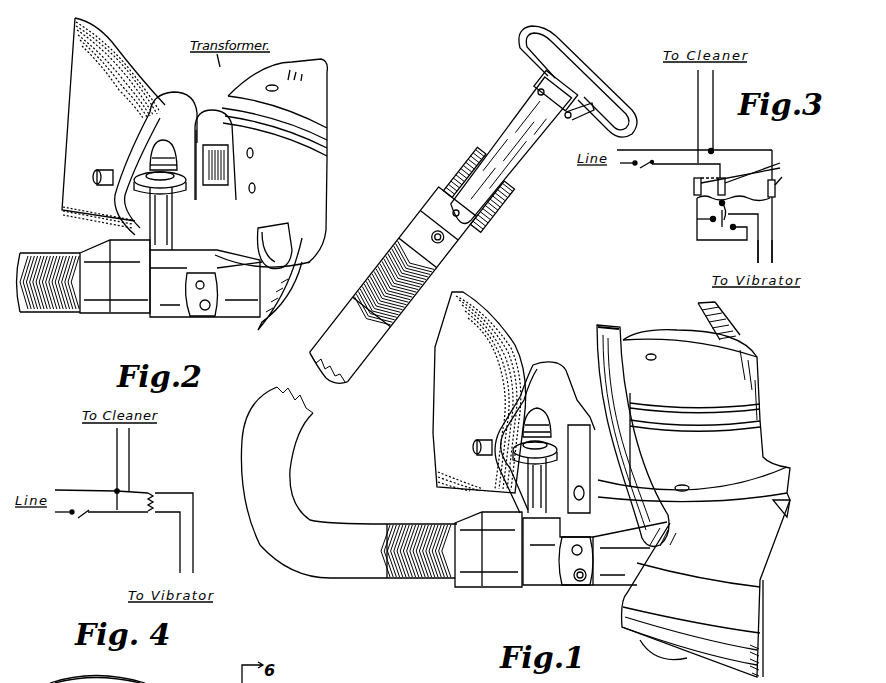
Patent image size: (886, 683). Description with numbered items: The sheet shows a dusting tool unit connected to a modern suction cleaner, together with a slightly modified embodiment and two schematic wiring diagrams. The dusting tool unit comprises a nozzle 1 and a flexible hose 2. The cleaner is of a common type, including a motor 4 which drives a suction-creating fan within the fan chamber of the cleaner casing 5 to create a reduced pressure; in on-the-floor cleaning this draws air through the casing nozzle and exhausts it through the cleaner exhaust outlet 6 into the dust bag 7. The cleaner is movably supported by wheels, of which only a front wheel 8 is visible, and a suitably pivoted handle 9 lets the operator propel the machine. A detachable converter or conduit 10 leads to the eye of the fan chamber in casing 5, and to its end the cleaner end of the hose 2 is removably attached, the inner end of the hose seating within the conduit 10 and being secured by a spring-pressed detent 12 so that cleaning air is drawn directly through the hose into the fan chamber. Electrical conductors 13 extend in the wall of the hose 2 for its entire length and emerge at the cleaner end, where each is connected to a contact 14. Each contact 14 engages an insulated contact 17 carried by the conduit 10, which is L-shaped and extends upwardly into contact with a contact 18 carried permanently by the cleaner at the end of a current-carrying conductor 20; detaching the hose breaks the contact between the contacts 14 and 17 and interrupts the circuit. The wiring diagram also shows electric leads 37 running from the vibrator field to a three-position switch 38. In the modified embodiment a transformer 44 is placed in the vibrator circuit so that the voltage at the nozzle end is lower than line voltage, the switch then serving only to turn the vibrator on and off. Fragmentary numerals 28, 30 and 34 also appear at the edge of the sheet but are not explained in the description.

In FIG. 1, the nozzle 1 is at (563, 58).
In FIG. 2, the flexible hose 2 is at (53, 310).
In FIG. 1, the flexible hose 2 is at (287, 470).
In FIG. 2, the motor 4 is at (261, 163).
In FIG. 1, the motor 4 is at (694, 409).
In FIG. 1, the cleaner casing 5 is at (706, 588).
In FIG. 2, the cleaner exhaust outlet 6 is at (171, 98).
In FIG. 1, the cleaner exhaust outlet 6 is at (550, 366).
In FIG. 2, the dust bag 7 is at (113, 123).
In FIG. 1, the dust bag 7 is at (498, 326).
In FIG. 1, the front wheel 8 is at (655, 652).
In FIG. 2, the handle 9 is at (280, 228).
In FIG. 1, the handle 9 is at (617, 333).
In FIG. 2, the converter or conduit 10 is at (253, 295).
In FIG. 1, the converter or conduit 10 is at (628, 569).
In FIG. 2, the spring-pressed detent 12 is at (207, 316).
In FIG. 1, the spring-pressed detent 12 is at (582, 587).
In FIG. 3, the electrical conductors 13 is at (697, 204).
In FIG. 4, the electrical conductors 13 is at (180, 545).
In FIG. 3, the contact 14 is at (749, 177).
In FIG. 3, the insulated contact 17 is at (762, 177).
In FIG. 3, the contact 18 is at (803, 206).
In FIG. 3, the current-carrying conductor 20 is at (680, 140).
In FIG. 4, the element 28 is at (113, 675).
In FIG. 1, the element 30 is at (358, 682).
In FIG. 1, the element 34 is at (472, 675).
In FIG. 3, the electric leads 37 is at (758, 247).
In FIG. 3, the three-position switch 38 is at (728, 213).
In FIG. 2, the transformer 44 is at (212, 112).
In FIG. 4, the transformer 44 is at (153, 492).